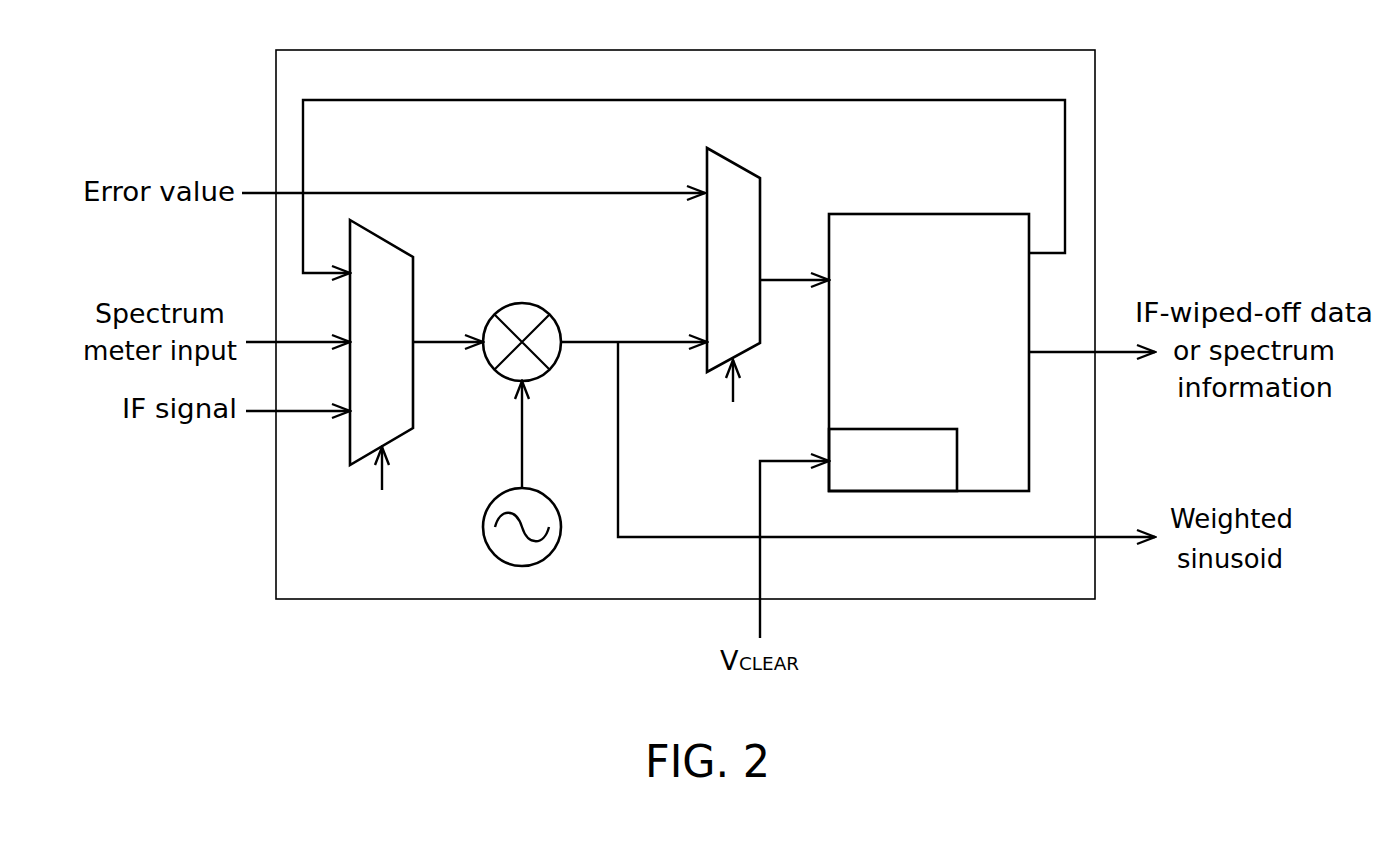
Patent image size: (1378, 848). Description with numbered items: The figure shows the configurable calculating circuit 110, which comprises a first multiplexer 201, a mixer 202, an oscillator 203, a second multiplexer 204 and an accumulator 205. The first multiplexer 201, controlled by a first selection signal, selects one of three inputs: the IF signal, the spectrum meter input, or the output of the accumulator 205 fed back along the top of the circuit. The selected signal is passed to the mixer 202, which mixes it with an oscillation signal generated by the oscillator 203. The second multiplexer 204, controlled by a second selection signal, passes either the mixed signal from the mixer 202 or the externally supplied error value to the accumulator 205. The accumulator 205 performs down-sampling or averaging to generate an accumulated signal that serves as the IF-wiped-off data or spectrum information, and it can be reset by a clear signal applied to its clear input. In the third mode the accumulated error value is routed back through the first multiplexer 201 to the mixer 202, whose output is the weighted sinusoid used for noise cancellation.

The configurable calculating circuit 110 is at (685, 50).
The first multiplexer 201 is at (385, 234).
The mixer 202 is at (522, 303).
The oscillator 203 is at (484, 537).
The second multiplexer 204 is at (733, 160).
The accumulator 205 is at (930, 214).